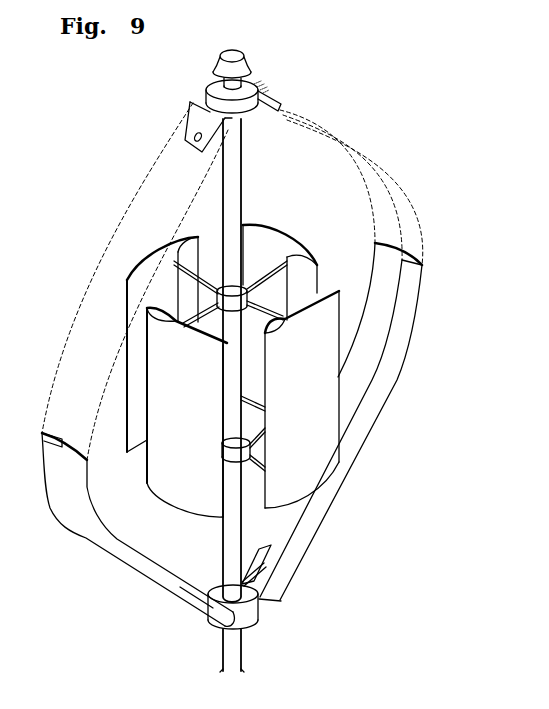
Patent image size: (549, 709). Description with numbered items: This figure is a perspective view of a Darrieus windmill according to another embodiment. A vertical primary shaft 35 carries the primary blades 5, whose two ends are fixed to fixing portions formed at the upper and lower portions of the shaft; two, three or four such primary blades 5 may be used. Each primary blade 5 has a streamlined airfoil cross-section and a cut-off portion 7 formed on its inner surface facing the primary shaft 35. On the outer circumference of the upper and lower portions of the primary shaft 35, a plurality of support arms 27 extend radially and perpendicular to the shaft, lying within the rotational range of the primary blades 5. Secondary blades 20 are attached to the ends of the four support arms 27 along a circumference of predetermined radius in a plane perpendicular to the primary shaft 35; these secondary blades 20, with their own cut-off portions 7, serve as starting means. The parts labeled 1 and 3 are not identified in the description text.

The generator 1 is at (188, 118).
The lower hub bearing 3 is at (243, 608).
The primary blade 5 is at (424, 289).
The cut-off portion 7 is at (403, 298).
The secondary blades 20 is at (318, 412).
The support arms 27 is at (268, 255).
The primary shaft 35 is at (233, 517).